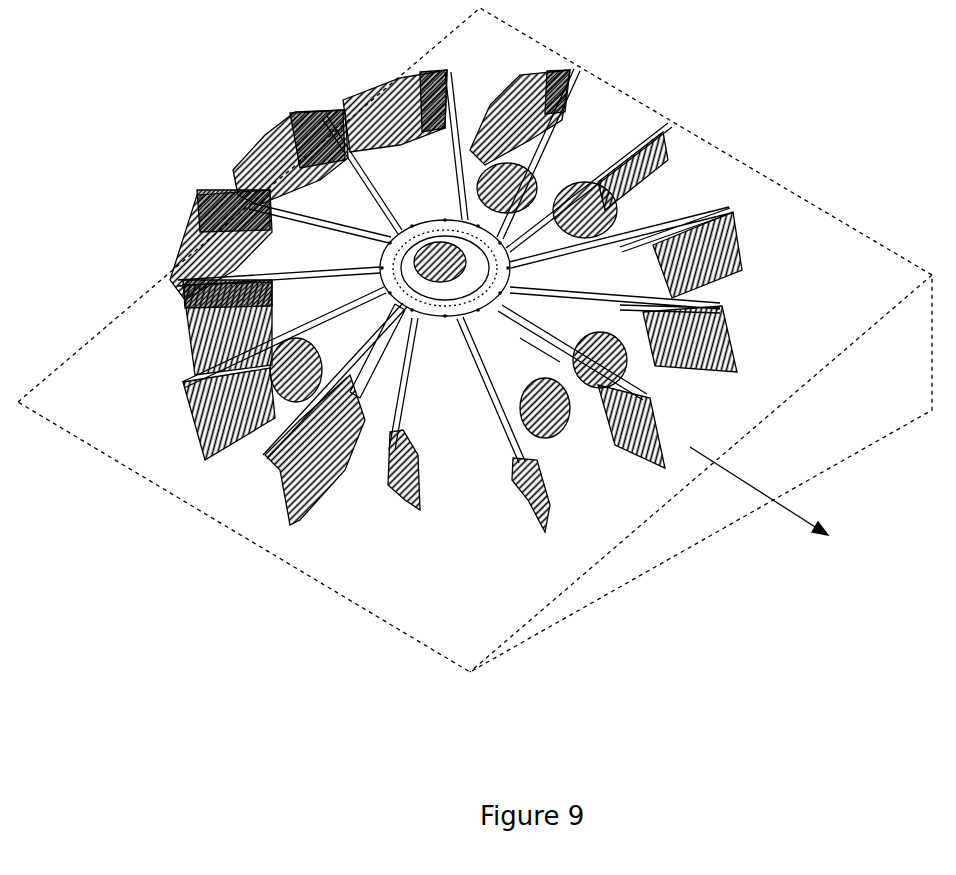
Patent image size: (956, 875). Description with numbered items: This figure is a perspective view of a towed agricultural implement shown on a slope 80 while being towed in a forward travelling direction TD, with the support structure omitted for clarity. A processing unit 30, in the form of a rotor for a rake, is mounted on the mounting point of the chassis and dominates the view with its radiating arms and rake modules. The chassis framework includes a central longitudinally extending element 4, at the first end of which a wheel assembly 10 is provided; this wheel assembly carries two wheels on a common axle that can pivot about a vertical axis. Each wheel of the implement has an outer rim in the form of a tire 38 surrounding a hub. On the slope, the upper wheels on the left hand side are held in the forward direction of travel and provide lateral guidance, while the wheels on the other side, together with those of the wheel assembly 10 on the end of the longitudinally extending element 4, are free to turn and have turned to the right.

The processing unit 30 is at (456, 308).
The tire 38 is at (545, 163).
The central longitudinally extending element 4 is at (516, 354).
The wheel assembly 10 is at (585, 415).
The slope 80 is at (523, 580).
The forward travelling direction TD is at (777, 507).